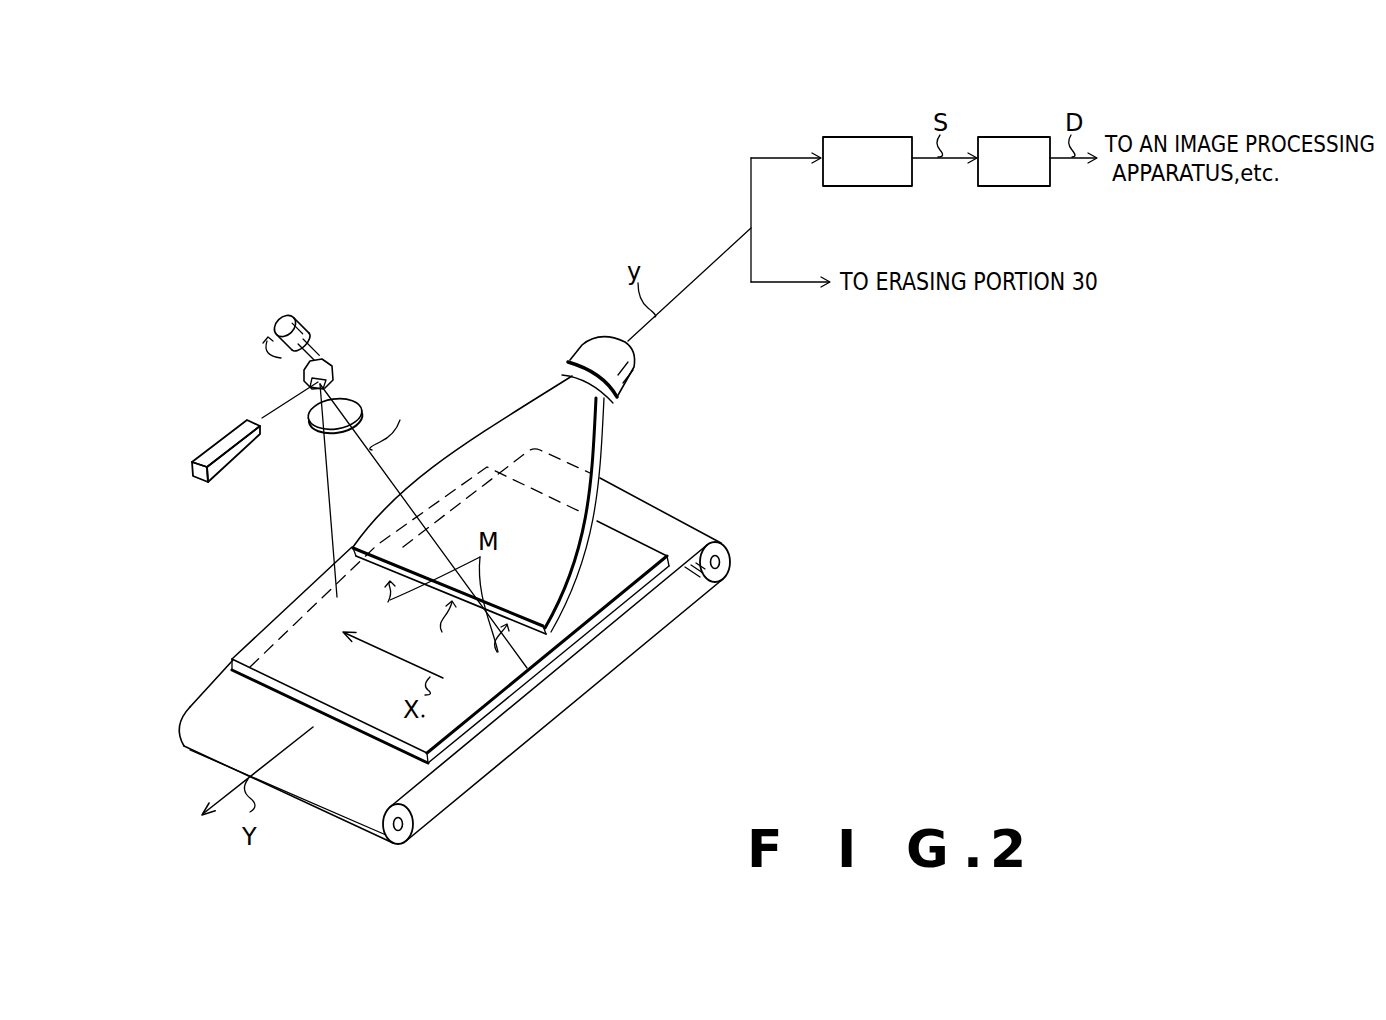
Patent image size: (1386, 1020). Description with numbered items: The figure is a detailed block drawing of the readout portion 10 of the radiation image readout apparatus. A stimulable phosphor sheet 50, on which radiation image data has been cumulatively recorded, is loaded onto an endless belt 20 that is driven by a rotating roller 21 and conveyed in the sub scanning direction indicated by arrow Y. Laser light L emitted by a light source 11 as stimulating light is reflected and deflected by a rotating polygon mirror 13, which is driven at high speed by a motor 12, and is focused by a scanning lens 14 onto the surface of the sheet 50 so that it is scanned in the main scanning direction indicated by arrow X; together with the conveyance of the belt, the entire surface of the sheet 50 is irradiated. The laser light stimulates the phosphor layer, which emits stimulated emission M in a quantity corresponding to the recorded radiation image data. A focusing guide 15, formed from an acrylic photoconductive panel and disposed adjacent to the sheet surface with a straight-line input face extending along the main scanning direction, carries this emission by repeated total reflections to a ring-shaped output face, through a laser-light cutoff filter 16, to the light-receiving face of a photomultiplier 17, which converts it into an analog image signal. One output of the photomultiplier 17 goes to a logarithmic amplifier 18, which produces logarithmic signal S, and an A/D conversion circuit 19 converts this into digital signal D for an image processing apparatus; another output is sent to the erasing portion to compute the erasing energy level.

The readout portion 10 is at (242, 360).
The light source 11 is at (247, 417).
The motor 12 is at (311, 330).
The galvanometer mirror 13 is at (338, 380).
The scanning lens 14 is at (357, 397).
The focusing guide 15 is at (483, 440).
The laser-light cutoff filter 16 is at (562, 370).
The photomultiplier 17 is at (590, 353).
The logarithmic amplifier 18 is at (892, 137).
The A/D conversion circuit 19 is at (1023, 137).
The endless belt 20 is at (643, 640).
The roller 21 is at (400, 841).
The stimulable phosphor sheet 50 is at (302, 612).